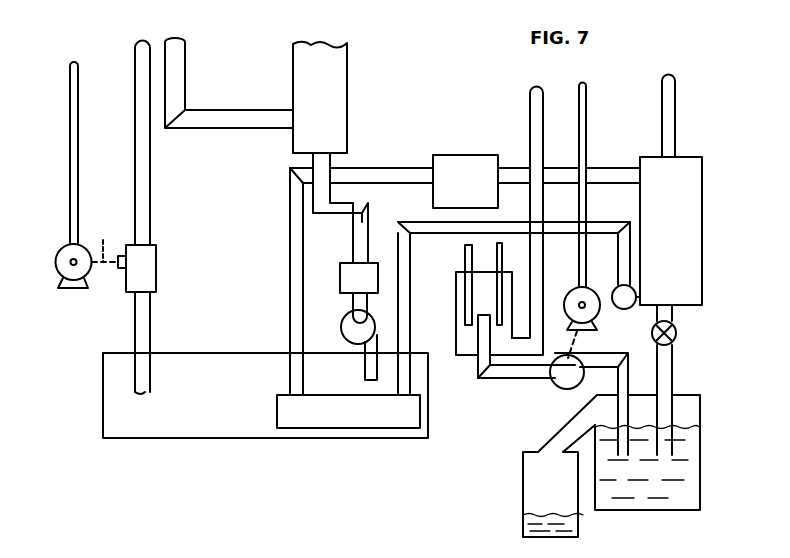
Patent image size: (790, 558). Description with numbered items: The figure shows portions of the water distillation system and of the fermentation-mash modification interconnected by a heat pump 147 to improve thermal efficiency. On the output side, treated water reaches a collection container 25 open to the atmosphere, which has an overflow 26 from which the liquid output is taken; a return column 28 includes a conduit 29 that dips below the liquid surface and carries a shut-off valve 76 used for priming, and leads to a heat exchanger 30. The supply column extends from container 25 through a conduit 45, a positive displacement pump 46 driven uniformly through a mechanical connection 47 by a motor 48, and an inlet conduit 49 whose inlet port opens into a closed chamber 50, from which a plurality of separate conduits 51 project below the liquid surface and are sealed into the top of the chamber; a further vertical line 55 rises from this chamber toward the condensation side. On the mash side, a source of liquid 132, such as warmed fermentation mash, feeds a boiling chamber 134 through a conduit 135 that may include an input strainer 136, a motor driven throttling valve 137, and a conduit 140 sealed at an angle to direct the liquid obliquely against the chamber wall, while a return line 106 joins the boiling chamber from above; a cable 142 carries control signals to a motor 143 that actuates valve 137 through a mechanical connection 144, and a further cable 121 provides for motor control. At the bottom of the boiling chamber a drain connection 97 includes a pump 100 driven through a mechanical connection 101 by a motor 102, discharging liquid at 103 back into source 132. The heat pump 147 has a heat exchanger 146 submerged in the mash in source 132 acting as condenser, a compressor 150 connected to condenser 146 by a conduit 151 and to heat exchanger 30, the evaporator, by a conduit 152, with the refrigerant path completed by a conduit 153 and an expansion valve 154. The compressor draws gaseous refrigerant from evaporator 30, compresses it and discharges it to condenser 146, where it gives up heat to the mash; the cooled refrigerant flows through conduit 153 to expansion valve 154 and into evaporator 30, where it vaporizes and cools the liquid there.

The collection container 25 is at (680, 498).
The overflow 26 is at (556, 438).
The return column 28 is at (667, 117).
The conduit 29 is at (673, 351).
The heat exchanger 30 is at (700, 196).
The conduit 45 is at (630, 385).
The positive displacement pump 46 is at (566, 380).
The mechanical connection 47 is at (583, 338).
The motor 48 is at (572, 295).
The inlet conduit 49 is at (504, 378).
The closed chamber 50 is at (468, 345).
The separate conduits 51 is at (465, 253).
The pipe 55 is at (534, 117).
The shut-off valve 76 is at (676, 330).
The drain connection 97 is at (346, 224).
The pump 100 is at (334, 188).
The mechanical connection 101 is at (348, 272).
The motor 102 is at (348, 313).
The discharge 103 is at (365, 371).
The pipe 106 is at (253, 130).
The cable 121 is at (587, 120).
The source of liquid 132 is at (230, 433).
The boiling chamber 134 is at (347, 78).
The conduit 135 is at (150, 314).
The input strainer 136 is at (150, 392).
The motor driven throttling valve 137 is at (157, 262).
The conduit 140 is at (150, 184).
The cable 142 is at (78, 134).
The motor 143 is at (73, 290).
The mechanical connection 144 is at (104, 241).
The heat exchanger 146 is at (375, 420).
The heat pump 147 is at (499, 99).
The compressor 150 is at (460, 160).
The conduit 151 is at (408, 166).
The conduit 152 is at (560, 178).
The conduit 153 is at (413, 225).
The expansion valve 154 is at (628, 306).